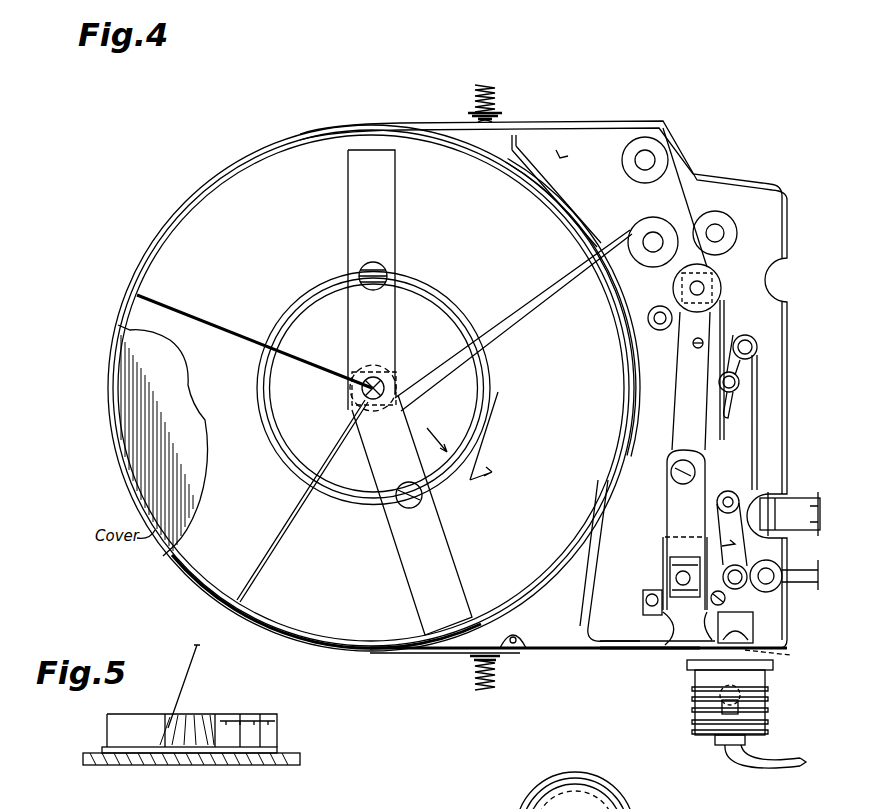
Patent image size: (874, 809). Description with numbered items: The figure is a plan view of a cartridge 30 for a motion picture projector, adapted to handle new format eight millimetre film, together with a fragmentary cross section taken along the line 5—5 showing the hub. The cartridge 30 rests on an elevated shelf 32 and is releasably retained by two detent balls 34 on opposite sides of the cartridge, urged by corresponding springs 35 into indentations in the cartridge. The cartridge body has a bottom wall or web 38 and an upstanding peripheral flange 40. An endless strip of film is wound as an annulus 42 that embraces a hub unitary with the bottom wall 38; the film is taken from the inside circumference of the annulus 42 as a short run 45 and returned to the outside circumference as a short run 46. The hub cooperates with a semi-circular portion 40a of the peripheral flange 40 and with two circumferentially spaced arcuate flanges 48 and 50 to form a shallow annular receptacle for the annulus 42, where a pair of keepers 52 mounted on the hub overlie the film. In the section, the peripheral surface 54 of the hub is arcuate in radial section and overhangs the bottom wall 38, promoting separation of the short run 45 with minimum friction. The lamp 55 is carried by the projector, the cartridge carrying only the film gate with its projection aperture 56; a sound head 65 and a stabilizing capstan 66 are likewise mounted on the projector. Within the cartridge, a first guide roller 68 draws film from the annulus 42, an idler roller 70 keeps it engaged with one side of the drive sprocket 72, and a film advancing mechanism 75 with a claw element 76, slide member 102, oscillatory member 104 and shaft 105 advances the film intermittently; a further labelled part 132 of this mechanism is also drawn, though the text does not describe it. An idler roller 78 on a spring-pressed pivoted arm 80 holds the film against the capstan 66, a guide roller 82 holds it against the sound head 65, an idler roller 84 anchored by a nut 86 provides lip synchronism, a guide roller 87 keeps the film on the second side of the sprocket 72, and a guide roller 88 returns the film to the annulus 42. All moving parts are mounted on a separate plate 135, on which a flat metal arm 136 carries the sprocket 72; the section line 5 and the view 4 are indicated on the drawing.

In FIG. 4, the inner ring 4 is at (350, 500).
In FIG. 4, the section line 5 is at (449, 453).
In FIG. 5, the cartridge 30 is at (285, 748).
In FIG. 5, the elevated shelf 32 is at (290, 765).
In FIG. 4, the detent balls 34 is at (500, 115).
In FIG. 4, the springs 35 is at (495, 100).
In FIG. 4, the bottom wall or web 38 is at (633, 602).
In FIG. 4, the peripheral flange 40 is at (648, 122).
In FIG. 4, the semi-circular portion of the peripheral flange 40a is at (210, 592).
In FIG. 4, the annulus 42 is at (371, 388).
In FIG. 4, the short run of film 45 is at (525, 375).
In FIG. 4, the short run of film 46 is at (572, 155).
In FIG. 4, the arcuate flange 48 is at (590, 212).
In FIG. 4, the arcuate flange 50 is at (640, 340).
In FIG. 4, the keepers 52 is at (385, 252).
In FIG. 5, the peripheral surface of the hub 54 is at (160, 735).
In FIG. 4, the lamp 55 is at (770, 700).
In FIG. 4, the projection aperture 56 is at (768, 641).
In FIG. 4, the sound head 65 is at (775, 505).
In FIG. 4, the stabilizing capstan 66 is at (782, 577).
In FIG. 4, the first guide roller 68 is at (645, 255).
In FIG. 4, the idler roller 70 is at (656, 308).
In FIG. 4, the drive sprocket 72 is at (718, 275).
In FIG. 4, the film advancing mechanism 75 is at (655, 537).
In FIG. 4, the claw element 76 is at (650, 650).
In FIG. 4, the idler roller 78 is at (731, 601).
In FIG. 4, the spring-pressed pivoted arm 80 is at (745, 555).
In FIG. 4, the guide roller 82 is at (752, 338).
In FIG. 4, the idler roller 84 is at (732, 340).
In FIG. 4, the nut 86 is at (726, 416).
In FIG. 4, the guide roller 87 is at (722, 222).
In FIG. 4, the guide roller 88 is at (625, 170).
In FIG. 4, the slide member 102 is at (665, 618).
In FIG. 4, the oscillatory member 104 is at (686, 530).
In FIG. 4, the shaft 105 is at (668, 553).
In FIG. 4, the pin 132 is at (675, 574).
In FIG. 4, the plate 135 is at (596, 585).
In FIG. 4, the flat metal arm 136 is at (698, 375).